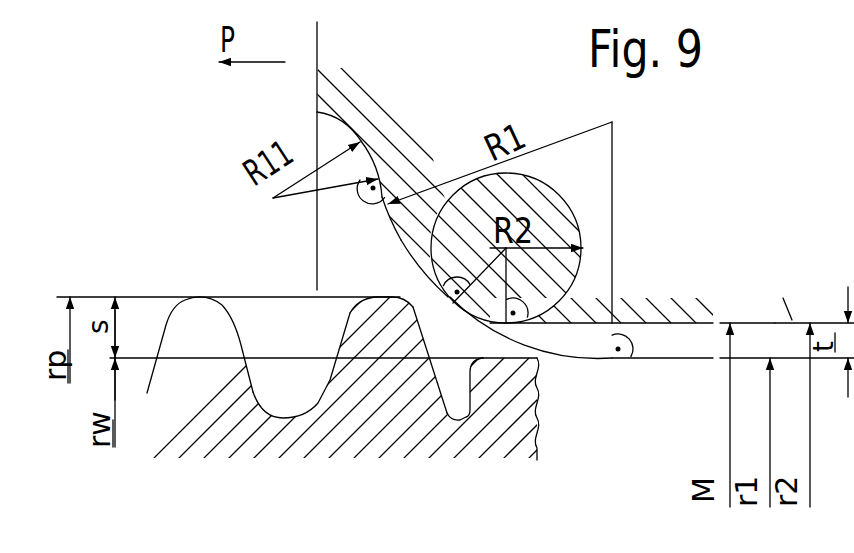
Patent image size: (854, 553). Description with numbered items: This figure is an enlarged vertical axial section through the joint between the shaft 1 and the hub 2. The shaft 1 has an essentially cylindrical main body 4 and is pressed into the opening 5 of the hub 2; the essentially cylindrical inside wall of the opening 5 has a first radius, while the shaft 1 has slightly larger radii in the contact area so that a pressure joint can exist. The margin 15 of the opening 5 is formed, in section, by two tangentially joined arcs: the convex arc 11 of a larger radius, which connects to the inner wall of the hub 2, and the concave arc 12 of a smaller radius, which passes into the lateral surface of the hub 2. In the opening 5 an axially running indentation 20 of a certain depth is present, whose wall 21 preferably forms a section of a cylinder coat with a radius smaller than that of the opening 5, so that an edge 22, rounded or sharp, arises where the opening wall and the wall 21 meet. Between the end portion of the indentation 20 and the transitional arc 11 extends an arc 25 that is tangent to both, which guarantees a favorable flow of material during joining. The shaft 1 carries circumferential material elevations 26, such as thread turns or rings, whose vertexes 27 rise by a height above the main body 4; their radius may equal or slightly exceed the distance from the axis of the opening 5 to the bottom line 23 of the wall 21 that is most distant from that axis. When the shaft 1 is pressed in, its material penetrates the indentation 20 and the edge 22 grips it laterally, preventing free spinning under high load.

The shaft 1 is at (143, 190).
The hub 2 is at (463, 127).
The main body 4 is at (517, 360).
The opening 5 is at (583, 458).
The arc 11 is at (412, 258).
The arc 12 is at (342, 125).
The margin 15 is at (394, 224).
The indentation 20 is at (667, 325).
The wall 21 is at (792, 322).
The edge 22 is at (692, 360).
The bottom line 23 is at (757, 322).
The arc 25 is at (457, 291).
The circumferential material elevations 26 is at (210, 294).
The vertexes 27 is at (387, 300).